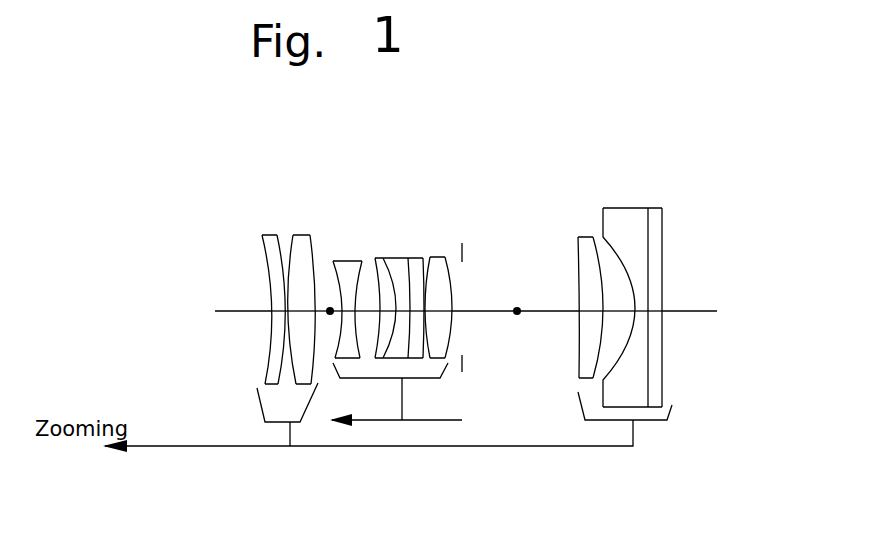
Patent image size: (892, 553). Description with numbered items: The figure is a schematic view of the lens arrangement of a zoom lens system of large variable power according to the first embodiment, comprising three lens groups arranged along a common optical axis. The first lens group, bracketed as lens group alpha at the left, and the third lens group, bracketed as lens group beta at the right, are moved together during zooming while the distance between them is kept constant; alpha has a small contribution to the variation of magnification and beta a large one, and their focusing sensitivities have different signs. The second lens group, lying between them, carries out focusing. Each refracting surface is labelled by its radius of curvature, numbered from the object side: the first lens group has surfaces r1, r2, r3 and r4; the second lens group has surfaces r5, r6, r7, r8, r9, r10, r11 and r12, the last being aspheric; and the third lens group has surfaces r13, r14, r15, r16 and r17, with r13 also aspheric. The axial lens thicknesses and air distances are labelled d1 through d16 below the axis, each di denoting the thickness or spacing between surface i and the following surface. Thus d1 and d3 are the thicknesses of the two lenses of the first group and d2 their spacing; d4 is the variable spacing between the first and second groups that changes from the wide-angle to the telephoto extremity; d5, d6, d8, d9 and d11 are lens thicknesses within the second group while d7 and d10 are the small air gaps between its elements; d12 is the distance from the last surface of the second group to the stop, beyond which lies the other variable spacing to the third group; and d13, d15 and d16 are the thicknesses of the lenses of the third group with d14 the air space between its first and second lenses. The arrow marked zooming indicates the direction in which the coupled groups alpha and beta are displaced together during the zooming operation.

The radius of curvature of first lens surface r1 is at (262, 235).
The radius of curvature of second lens surface r2 is at (277, 235).
The radius of curvature of third lens surface r3 is at (293, 235).
The radius of curvature of fourth lens surface r4 is at (310, 235).
The radius of curvature of fifth lens surface r5 is at (333, 261).
The radius of curvature of sixth lens surface r6 is at (362, 261).
The radius of curvature of seventh lens surface r7 is at (375, 258).
The radius of curvature of eighth lens surface r8 is at (383, 258).
The radius of curvature of ninth lens surface r9 is at (408, 258).
The radius of curvature of tenth lens surface r10 is at (423, 258).
The radius of curvature of eleventh lens surface r11 is at (430, 257).
The radius of curvature of twelfth lens surface r12 is at (445, 257).
The radius of curvature of thirteenth lens surface r13 is at (578, 237).
The radius of curvature of fourteenth lens surface r14 is at (593, 237).
The radius of curvature of fifteenth lens surface r15 is at (604, 233).
The radius of curvature of sixteenth lens surface r16 is at (648, 208).
The radius of curvature of seventeenth lens surface r17 is at (662, 208).
The lens thickness between first and second surfaces d1 is at (278, 311).
The distance between second and third surfaces d2 is at (287, 311).
The lens thickness between third and fourth surfaces d3 is at (301, 311).
The distance between fourth and fifth surfaces d4 is at (328, 311).
The lens thickness between fifth and sixth surfaces d5 is at (348, 311).
The lens thickness between sixth and seventh surfaces d6 is at (368, 311).
The distance between seventh and eighth surfaces d7 is at (388, 311).
The lens thickness between eighth and ninth surfaces d8 is at (403, 311).
The lens thickness between ninth and tenth surfaces d9 is at (418, 311).
The distance between tenth and eleventh surfaces d10 is at (426, 311).
The lens thickness between eleventh and twelfth surfaces d11 is at (438, 311).
The distance between twelfth surface and stop d12 is at (517, 311).
The lens thickness between thirteenth and fourteenth surfaces d13 is at (591, 311).
The distance between fourteenth and fifteenth surfaces d14 is at (619, 311).
The lens thickness between fifteenth and sixteenth surfaces d15 is at (641, 311).
The lens thickness between sixteenth and seventeenth surfaces d16 is at (655, 311).